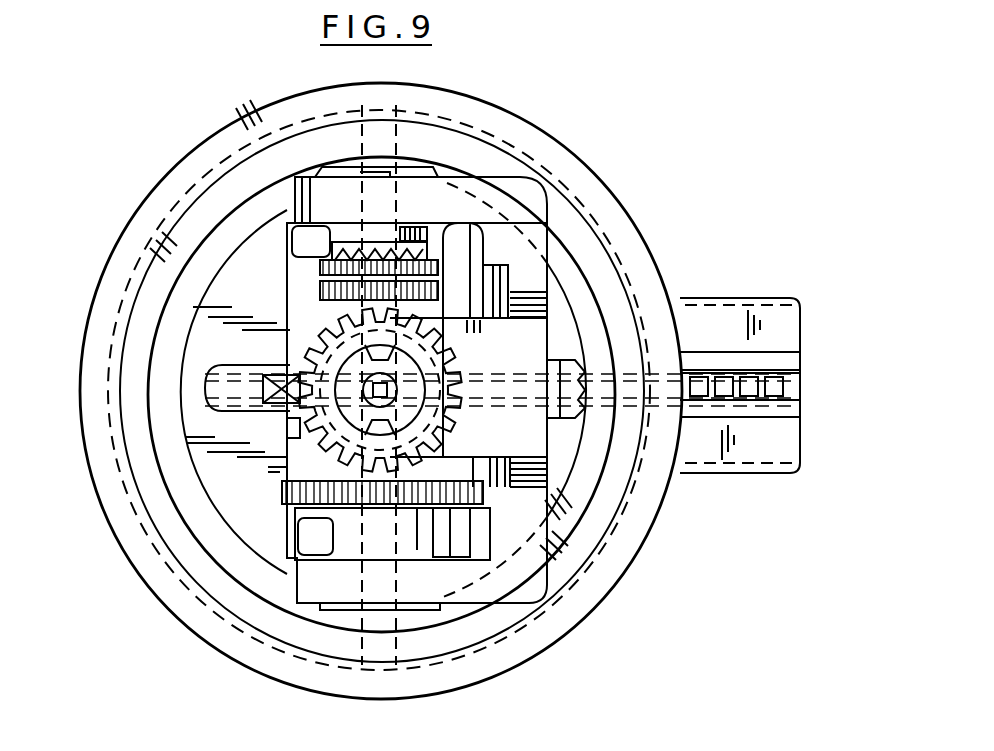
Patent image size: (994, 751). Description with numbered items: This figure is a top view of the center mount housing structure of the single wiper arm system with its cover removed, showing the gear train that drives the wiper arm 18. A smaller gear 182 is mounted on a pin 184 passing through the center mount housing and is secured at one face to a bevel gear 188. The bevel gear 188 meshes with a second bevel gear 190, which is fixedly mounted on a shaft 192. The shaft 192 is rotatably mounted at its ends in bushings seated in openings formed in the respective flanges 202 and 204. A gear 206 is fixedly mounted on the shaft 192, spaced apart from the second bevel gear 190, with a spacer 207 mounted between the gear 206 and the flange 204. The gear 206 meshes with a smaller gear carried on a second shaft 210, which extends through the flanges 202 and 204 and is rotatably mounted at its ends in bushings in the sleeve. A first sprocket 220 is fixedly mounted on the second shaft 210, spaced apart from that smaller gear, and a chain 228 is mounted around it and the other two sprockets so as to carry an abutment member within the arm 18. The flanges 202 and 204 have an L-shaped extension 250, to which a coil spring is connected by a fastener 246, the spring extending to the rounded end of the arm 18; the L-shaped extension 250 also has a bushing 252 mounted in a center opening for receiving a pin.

The wiper arm 18 is at (708, 300).
The gear 182 is at (272, 470).
The pin 184 is at (392, 406).
The bevel gear 188 is at (292, 428).
The second bevel gear 190 is at (313, 318).
The shaft 192 is at (375, 168).
The flange 202 is at (498, 200).
The flange 204 is at (498, 590).
The gear 206 is at (290, 507).
The spacer 207 is at (352, 535).
The second shaft 210 is at (388, 143).
The first sprocket 220 is at (292, 372).
The chain 228 is at (727, 403).
The fastener 246 is at (583, 372).
The L-shaped extension 250 is at (533, 358).
The bushing 252 is at (262, 392).